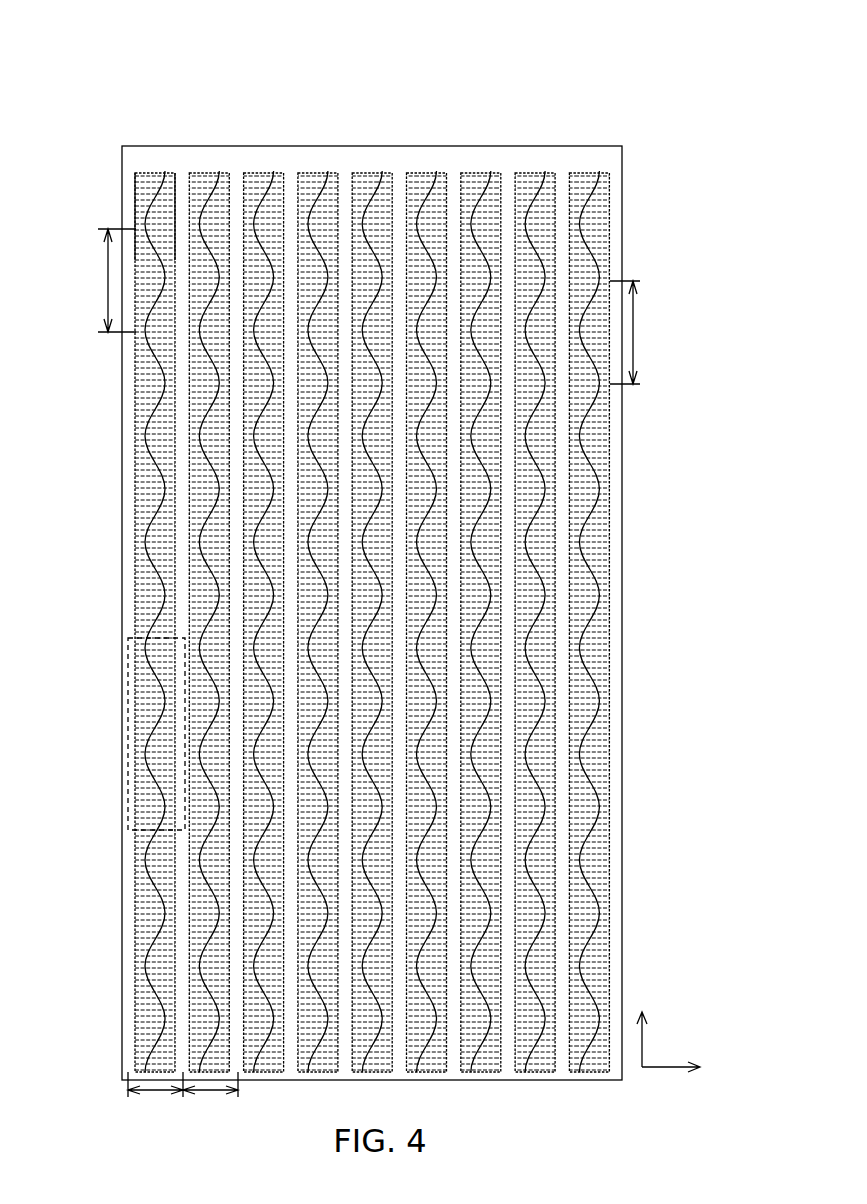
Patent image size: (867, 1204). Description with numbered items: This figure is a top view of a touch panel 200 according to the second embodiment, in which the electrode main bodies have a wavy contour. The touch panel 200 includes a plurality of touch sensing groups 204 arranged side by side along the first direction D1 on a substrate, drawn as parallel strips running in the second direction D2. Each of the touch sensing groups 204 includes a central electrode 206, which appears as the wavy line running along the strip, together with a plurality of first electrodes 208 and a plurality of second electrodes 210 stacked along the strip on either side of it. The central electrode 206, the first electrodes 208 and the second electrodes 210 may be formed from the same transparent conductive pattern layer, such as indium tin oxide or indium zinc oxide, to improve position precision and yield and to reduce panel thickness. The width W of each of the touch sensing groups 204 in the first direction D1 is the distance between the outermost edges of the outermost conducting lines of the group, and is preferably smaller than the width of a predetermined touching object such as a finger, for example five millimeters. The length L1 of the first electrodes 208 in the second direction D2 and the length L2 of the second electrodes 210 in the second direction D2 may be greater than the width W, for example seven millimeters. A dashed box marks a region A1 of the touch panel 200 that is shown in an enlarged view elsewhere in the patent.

The touch panel 200 is at (607, 120).
The touch sensing groups 204 is at (173, 149).
The central electrode 206 is at (164, 173).
The first electrodes 208 is at (176, 183).
The second electrodes 210 is at (136, 198).
The length of the first electrodes L1 is at (639, 332).
The length of the second electrodes L2 is at (105, 280).
The width of the touch sensing groups W is at (183, 1099).
The region A1 is at (128, 710).
The first direction D1 is at (687, 1069).
The second direction D2 is at (643, 1026).